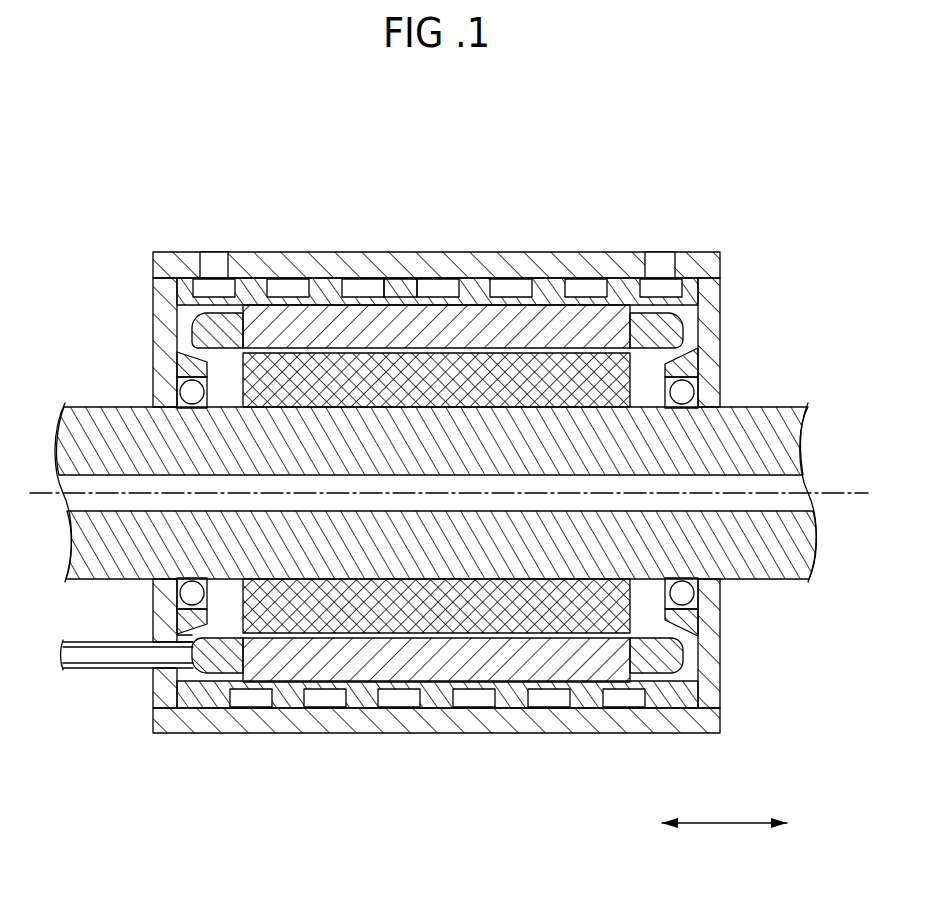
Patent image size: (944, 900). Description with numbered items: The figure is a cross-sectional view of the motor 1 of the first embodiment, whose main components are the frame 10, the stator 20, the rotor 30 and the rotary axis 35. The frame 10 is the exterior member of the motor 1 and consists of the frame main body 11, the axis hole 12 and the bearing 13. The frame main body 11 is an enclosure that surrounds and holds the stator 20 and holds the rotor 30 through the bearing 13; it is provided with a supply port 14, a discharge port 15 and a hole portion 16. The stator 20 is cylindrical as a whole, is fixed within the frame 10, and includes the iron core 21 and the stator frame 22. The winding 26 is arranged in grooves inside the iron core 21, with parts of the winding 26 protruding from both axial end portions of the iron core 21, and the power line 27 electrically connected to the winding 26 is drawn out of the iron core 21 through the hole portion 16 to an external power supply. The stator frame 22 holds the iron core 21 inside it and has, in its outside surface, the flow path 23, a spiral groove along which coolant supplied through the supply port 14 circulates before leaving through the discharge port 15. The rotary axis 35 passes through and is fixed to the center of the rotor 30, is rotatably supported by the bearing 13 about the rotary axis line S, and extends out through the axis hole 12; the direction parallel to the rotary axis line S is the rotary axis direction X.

The motor 1 is at (750, 167).
The frame 10 is at (479, 469).
The frame main body 11 is at (449, 459).
The axis hole 12 is at (150, 406).
The bearing 13 is at (180, 368).
The supply port 14 is at (658, 254).
The discharge port 15 is at (223, 262).
The hole portion 16 is at (150, 637).
The stator 20 is at (212, 297).
The iron core 21 is at (437, 485).
The stator frame 22 is at (402, 285).
The flow path 23 is at (365, 287).
The winding 26 is at (683, 318).
The power line 27 is at (90, 670).
The rotor 30 is at (634, 370).
The rotary axis 35 is at (785, 409).
The rotary axis line S is at (845, 491).
The rotary axis direction X is at (725, 823).